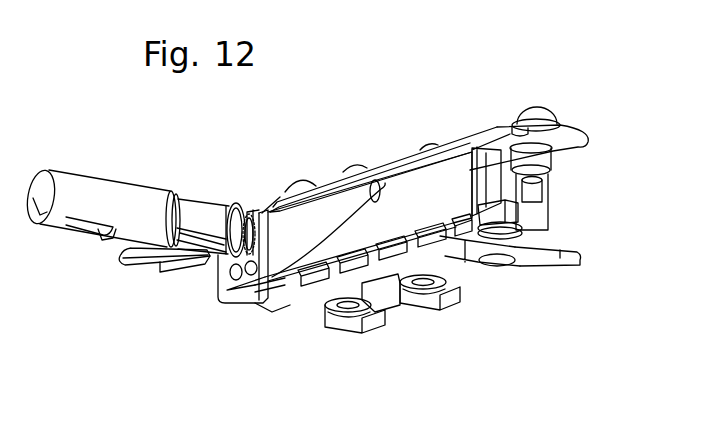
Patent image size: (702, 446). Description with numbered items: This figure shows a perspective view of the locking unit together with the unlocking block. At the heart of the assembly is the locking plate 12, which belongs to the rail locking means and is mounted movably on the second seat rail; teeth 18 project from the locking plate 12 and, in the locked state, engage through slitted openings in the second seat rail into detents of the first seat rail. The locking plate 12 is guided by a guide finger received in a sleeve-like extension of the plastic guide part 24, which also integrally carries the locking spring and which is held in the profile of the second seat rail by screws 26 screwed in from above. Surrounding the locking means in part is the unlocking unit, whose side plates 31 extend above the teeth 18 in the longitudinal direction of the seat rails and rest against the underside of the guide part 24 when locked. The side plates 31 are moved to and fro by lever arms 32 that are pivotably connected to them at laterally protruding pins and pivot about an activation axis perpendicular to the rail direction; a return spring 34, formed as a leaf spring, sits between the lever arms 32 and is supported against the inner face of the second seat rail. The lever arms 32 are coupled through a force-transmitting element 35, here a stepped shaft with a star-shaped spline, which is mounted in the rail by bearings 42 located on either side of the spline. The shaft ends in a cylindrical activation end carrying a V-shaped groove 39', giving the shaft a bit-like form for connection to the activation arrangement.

The locking plate 12 is at (523, 267).
The teeth 18 is at (580, 257).
The guide part 24 is at (567, 138).
The screws 26 is at (537, 117).
The side plates 31 is at (433, 195).
The lever arms 32 is at (298, 228).
The return spring 34 is at (161, 272).
The force-transmitting element 35 is at (196, 206).
The V-shaped groove 39' is at (102, 242).
The bearings 42 is at (229, 203).